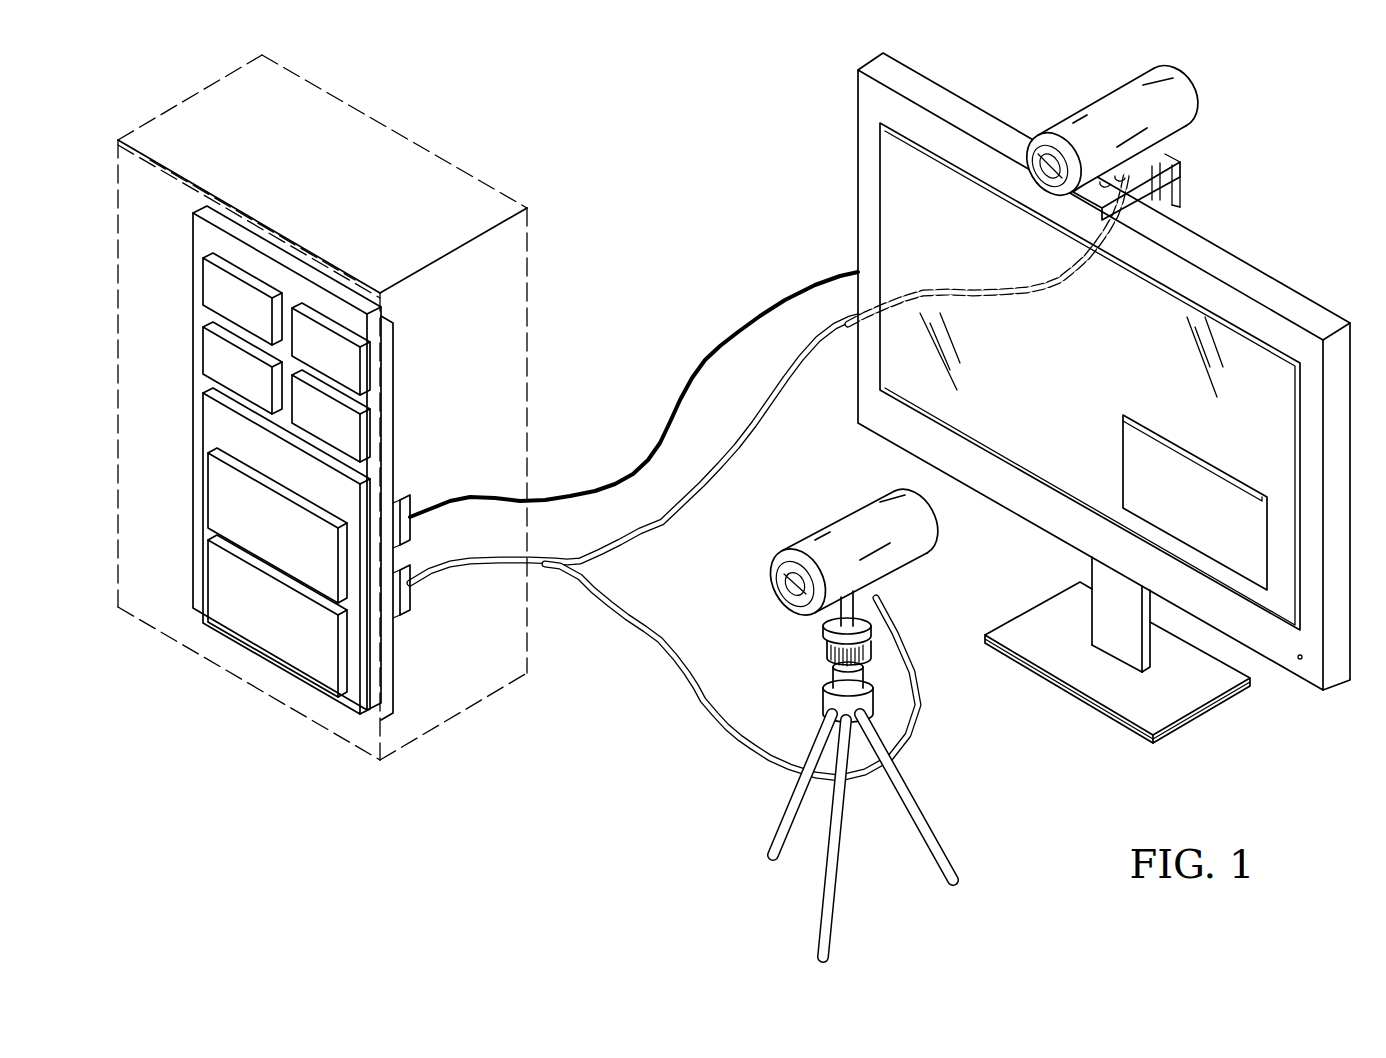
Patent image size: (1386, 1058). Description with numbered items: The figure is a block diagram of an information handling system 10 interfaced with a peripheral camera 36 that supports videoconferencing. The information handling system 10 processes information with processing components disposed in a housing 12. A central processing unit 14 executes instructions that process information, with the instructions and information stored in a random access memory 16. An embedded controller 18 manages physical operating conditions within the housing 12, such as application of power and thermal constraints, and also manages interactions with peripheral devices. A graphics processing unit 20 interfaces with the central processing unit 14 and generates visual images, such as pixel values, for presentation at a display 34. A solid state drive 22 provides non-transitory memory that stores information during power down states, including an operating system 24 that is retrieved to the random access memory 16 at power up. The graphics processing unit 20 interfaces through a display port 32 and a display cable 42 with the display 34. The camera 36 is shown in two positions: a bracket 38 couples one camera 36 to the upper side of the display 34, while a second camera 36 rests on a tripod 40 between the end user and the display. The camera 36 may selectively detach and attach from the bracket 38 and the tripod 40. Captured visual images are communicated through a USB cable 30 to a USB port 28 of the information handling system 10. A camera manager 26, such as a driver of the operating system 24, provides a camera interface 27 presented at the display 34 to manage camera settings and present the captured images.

The information handling system 10 is at (350, 490).
The housing 12 is at (204, 668).
The central processing unit (CPU) 14 is at (210, 273).
The random access memory (RAM) 16 is at (355, 347).
The embedded controller 18 is at (210, 342).
The graphics processing unit (GPU) 20 is at (355, 413).
The solid state drive (SSD) 22 is at (210, 421).
The operating system 24 is at (215, 500).
The camera manager 26 is at (215, 575).
The camera interface 27 is at (1132, 470).
The USB port 28 is at (412, 598).
The USB cable 30 is at (677, 523).
The display port 32 is at (412, 506).
The display 34 is at (1104, 398).
The peripheral camera 36 is at (937, 585).
The bracket 38 is at (1205, 166).
The tripod 40 is at (837, 900).
The display cable 42 is at (725, 338).